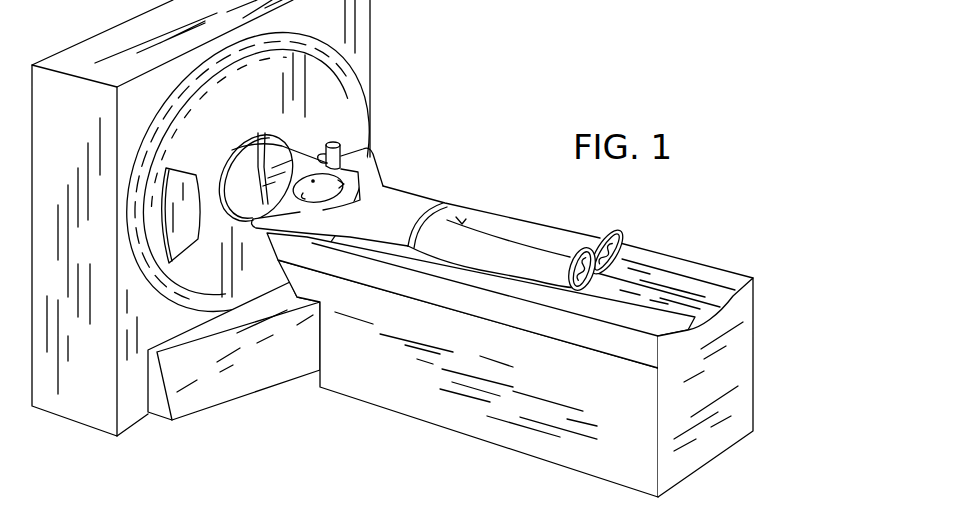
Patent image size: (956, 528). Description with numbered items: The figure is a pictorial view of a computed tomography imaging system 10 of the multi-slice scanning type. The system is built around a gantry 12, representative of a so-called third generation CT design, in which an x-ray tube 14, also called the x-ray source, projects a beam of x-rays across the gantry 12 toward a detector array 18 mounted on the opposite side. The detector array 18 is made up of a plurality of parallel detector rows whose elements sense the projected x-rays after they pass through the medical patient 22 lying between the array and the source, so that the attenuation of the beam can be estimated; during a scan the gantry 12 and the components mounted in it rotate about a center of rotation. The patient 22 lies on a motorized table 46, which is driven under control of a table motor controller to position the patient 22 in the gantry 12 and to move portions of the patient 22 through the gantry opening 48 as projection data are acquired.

The CT imaging system 10 is at (392, 248).
The gantry 12 is at (234, 228).
The x-ray tube 14 is at (341, 158).
The detector array 18 is at (178, 248).
The medical patient 22 is at (430, 203).
The motorized table 46 is at (402, 394).
The gantry opening 48 is at (268, 133).